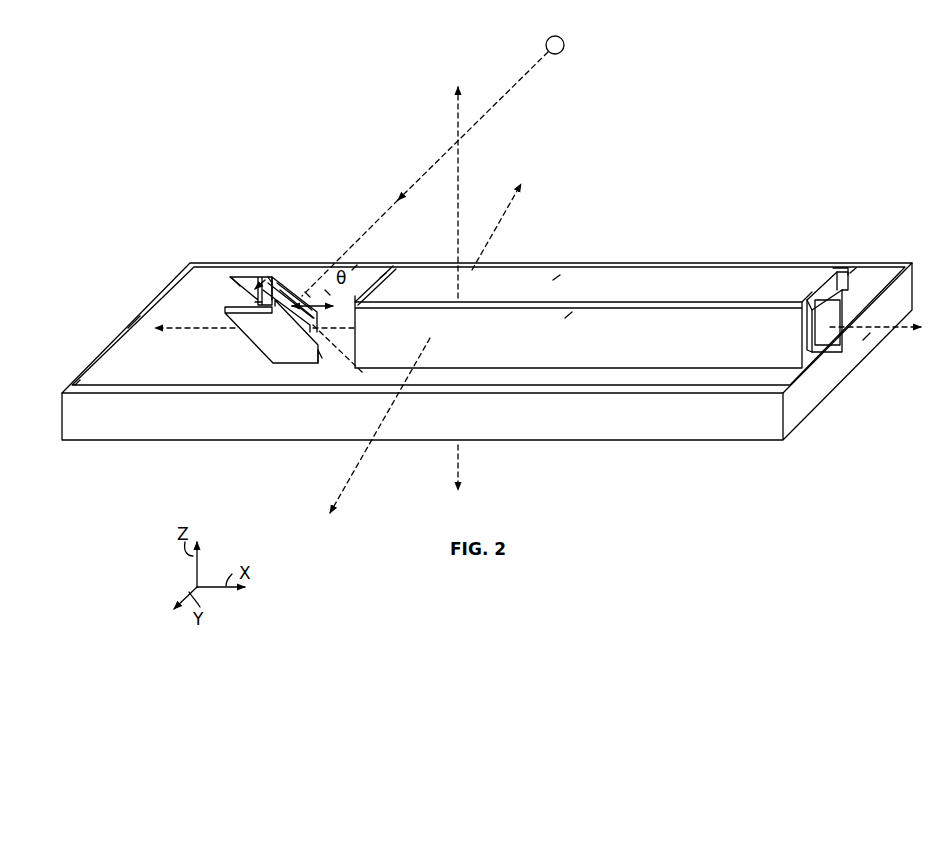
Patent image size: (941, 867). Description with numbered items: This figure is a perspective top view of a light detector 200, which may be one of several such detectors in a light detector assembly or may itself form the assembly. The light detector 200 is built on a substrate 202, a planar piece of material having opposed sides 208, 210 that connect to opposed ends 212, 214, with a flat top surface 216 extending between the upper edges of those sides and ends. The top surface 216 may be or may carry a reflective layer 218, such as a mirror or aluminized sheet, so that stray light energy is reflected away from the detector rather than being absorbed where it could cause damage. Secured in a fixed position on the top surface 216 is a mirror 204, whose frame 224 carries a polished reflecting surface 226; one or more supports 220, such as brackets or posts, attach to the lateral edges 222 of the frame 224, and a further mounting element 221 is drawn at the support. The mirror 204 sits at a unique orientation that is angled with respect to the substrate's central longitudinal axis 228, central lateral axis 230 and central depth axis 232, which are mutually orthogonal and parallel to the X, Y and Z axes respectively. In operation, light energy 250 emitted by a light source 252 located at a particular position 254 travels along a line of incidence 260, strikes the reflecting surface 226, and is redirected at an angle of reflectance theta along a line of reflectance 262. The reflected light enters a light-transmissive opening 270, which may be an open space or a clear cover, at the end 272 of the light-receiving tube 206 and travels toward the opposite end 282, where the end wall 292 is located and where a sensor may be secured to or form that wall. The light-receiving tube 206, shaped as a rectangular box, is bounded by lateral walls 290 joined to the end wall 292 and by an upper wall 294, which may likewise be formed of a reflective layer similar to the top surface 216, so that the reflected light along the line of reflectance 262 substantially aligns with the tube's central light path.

The light detector 200 is at (164, 189).
The substrate 202 is at (90, 432).
The mirror 204 is at (232, 278).
The light-receiving tube 206 is at (643, 285).
The side 208 is at (263, 417).
The side 210 is at (352, 270).
The end 212 is at (128, 327).
The end 214 is at (863, 340).
The top surface 216 is at (76, 385).
The reflective layer 218 is at (300, 285).
The support 220 is at (252, 280).
The mount 221 is at (280, 282).
The lateral edge 222 is at (322, 358).
The frame 224 is at (255, 302).
The reflecting surface 226 is at (325, 290).
The central longitudinal axis 228 is at (193, 328).
The central lateral axis 230 is at (500, 213).
The central depth axis 232 is at (462, 457).
The light energy 250 is at (475, 122).
The light source 252 is at (564, 43).
The position 254 is at (535, 29).
The line of incidence 260 is at (305, 292).
The line of reflectance 262 is at (380, 278).
The light-transmissive opening 270 is at (353, 343).
The end 272 is at (357, 365).
The opposite end 282 is at (843, 268).
The lateral wall 290 is at (565, 318).
The end wall 292 is at (850, 273).
The upper wall 294 is at (553, 280).